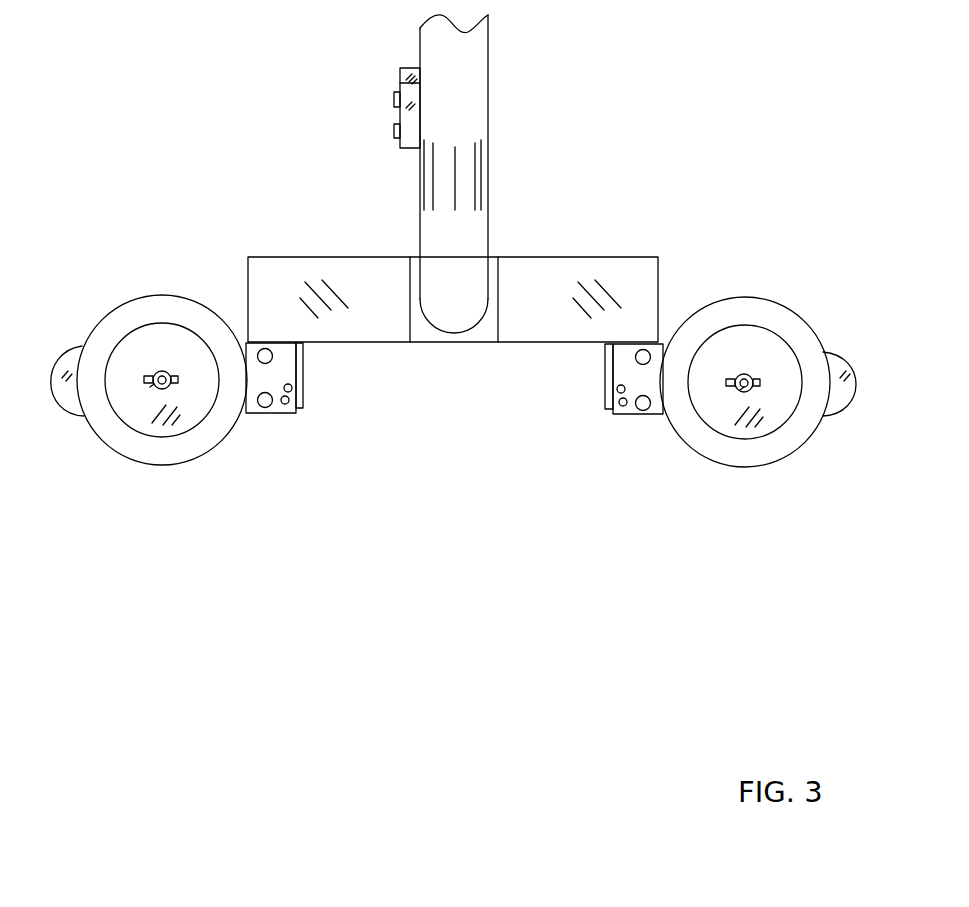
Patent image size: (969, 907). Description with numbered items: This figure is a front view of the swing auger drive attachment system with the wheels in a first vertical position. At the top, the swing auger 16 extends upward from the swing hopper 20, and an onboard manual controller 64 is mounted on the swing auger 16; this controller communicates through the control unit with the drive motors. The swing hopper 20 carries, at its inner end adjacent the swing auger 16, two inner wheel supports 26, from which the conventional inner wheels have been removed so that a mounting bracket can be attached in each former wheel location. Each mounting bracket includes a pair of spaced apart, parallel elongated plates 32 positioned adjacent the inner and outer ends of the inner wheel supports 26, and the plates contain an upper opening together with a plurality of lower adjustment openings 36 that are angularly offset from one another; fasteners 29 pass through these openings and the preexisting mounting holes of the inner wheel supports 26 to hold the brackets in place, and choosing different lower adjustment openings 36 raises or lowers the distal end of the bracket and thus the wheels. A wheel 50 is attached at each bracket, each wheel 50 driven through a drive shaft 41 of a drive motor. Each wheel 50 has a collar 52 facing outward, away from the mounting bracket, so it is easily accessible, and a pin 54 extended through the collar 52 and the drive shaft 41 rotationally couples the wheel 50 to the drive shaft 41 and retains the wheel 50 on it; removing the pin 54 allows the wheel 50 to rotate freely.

The swing auger 16 is at (490, 80).
The onboard manual controller 64 is at (396, 79).
The swing hopper 20 is at (613, 257).
The inner wheel supports 26 is at (303, 373).
The fasteners 29 is at (272, 355).
The lower adjustment openings 36 is at (291, 392).
The wheel 50 is at (185, 295).
The collar 52 is at (162, 371).
The pin 54 is at (172, 384).
The elongated plates 32 is at (80, 346).
The drive shaft 41 is at (158, 389).